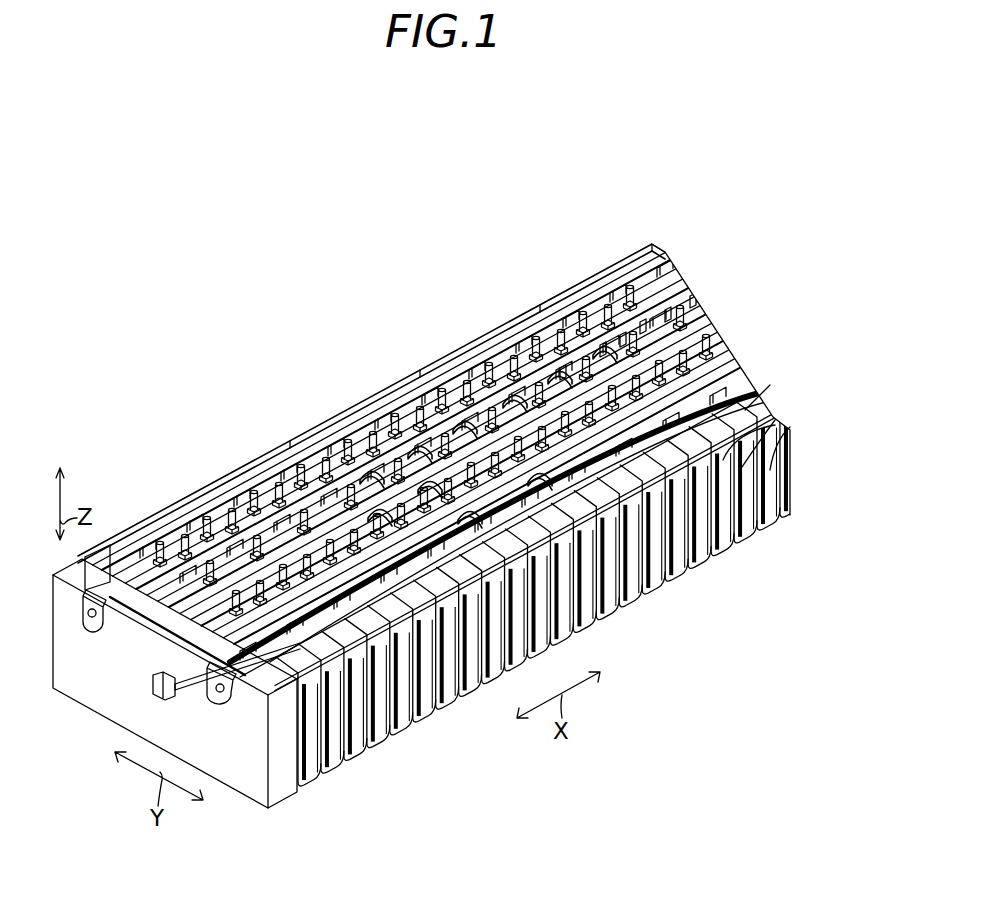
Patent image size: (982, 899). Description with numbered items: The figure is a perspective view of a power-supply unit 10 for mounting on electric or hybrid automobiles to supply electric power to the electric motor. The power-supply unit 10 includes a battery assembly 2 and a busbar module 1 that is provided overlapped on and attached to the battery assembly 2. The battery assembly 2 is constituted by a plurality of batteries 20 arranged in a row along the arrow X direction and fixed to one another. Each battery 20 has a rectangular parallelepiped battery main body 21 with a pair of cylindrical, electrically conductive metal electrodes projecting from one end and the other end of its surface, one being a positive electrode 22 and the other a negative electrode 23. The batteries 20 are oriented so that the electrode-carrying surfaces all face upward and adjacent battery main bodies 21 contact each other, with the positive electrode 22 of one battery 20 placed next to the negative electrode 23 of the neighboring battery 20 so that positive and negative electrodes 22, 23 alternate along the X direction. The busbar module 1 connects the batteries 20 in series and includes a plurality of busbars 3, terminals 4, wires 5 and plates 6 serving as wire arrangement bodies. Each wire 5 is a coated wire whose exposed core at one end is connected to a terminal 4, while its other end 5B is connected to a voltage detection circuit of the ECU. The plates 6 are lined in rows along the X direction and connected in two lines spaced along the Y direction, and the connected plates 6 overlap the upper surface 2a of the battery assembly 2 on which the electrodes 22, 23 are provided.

The power-supply unit 10 is at (608, 141).
The busbar module 1 is at (551, 196).
The battery assembly 2 is at (801, 440).
The upper surface 2a is at (759, 395).
The battery 20 is at (725, 570).
The battery main body 21 is at (795, 448).
The positive electrode 22 is at (613, 278).
The negative electrode 23 is at (640, 282).
The busbar 3 is at (190, 517).
The terminal 4 is at (200, 507).
The wire 5 is at (212, 697).
The other end of the wire 5B is at (180, 698).
The plate 6 is at (198, 418).